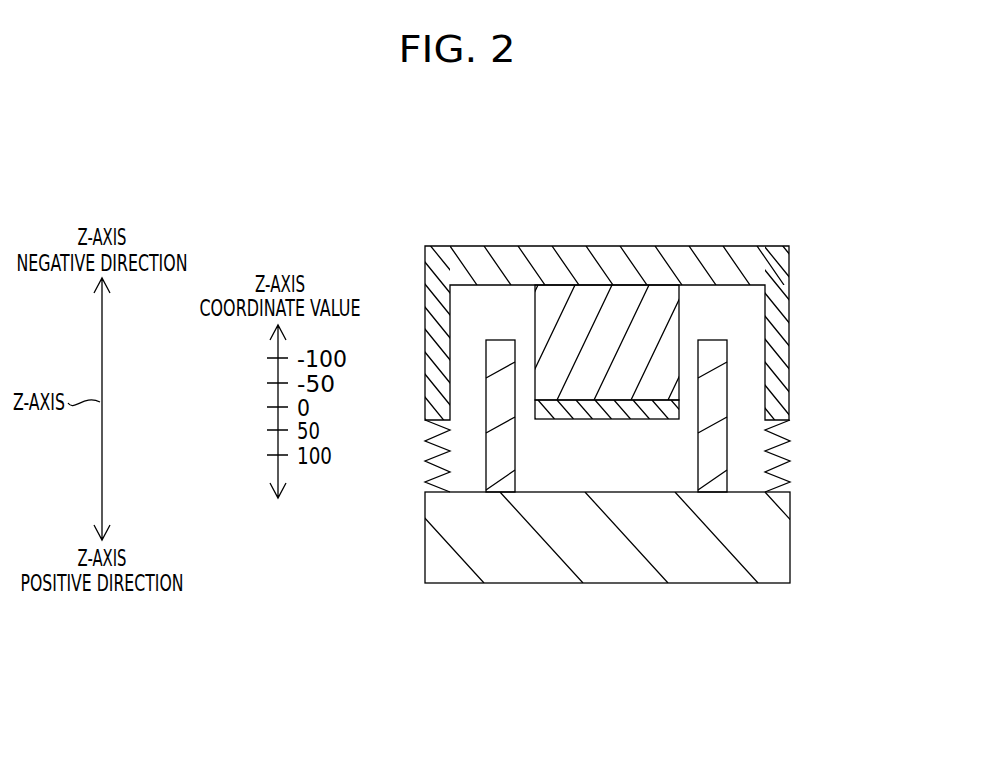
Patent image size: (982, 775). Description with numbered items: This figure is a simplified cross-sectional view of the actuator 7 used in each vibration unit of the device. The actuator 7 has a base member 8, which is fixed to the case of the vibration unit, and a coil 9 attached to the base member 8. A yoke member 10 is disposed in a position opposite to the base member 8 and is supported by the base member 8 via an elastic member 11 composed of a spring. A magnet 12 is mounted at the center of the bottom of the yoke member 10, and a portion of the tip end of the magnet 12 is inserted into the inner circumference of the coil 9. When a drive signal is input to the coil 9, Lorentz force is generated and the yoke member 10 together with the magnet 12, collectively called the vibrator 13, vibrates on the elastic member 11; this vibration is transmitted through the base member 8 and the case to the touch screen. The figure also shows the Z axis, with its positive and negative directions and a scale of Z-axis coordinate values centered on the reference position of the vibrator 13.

The actuator 7 is at (606, 216).
The base member 8 is at (765, 535).
The coil 9 is at (498, 468).
The yoke member 10 is at (780, 260).
The elastic member 11 is at (425, 459).
The magnet 12 is at (655, 303).
The vibrator 13 is at (876, 270).